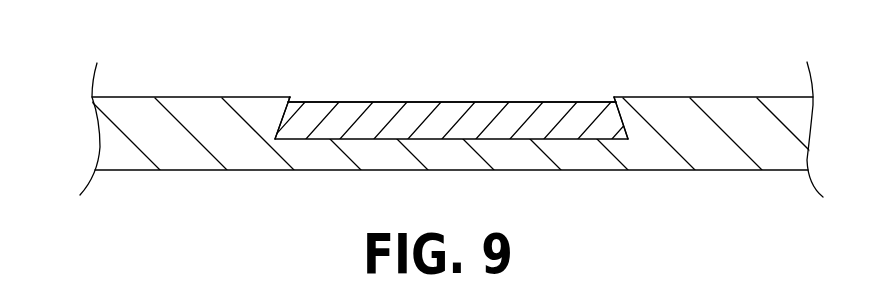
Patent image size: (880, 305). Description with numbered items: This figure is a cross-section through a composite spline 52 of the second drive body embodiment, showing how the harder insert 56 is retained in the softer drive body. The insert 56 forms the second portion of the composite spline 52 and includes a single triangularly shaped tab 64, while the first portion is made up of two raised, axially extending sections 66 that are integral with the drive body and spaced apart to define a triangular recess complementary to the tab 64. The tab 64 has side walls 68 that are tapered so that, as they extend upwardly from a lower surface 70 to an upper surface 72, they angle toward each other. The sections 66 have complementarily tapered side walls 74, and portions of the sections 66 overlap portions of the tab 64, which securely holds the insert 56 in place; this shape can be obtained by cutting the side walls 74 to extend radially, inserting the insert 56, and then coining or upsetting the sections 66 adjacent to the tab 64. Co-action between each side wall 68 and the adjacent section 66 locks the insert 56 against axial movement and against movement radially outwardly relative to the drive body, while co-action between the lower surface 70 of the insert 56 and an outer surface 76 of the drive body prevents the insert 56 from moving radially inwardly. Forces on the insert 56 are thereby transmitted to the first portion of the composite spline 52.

The composite spline 52 is at (731, 51).
The insert 56 is at (331, 97).
The triangularly shaped tab 64 is at (450, 100).
The raised axially extending sections 66 is at (253, 97).
The side walls 68 is at (272, 121).
The lower surface 70 is at (519, 140).
The upper surface 72 is at (553, 101).
The tapered side walls 74 is at (272, 121).
The outer surface 76 is at (403, 139).